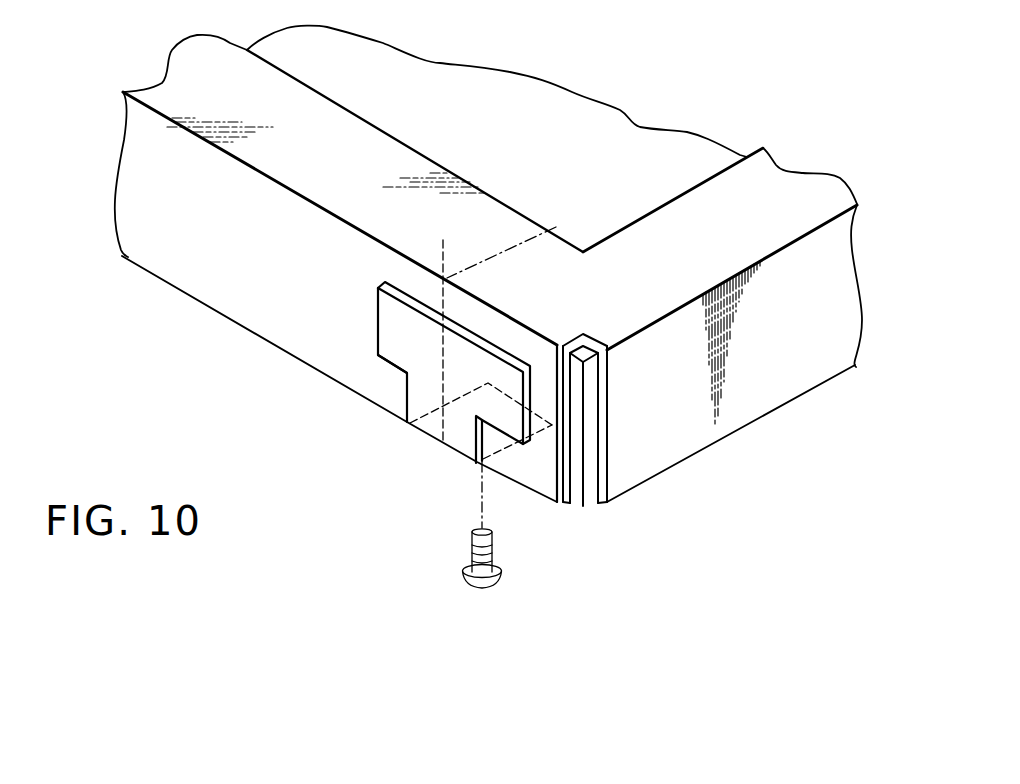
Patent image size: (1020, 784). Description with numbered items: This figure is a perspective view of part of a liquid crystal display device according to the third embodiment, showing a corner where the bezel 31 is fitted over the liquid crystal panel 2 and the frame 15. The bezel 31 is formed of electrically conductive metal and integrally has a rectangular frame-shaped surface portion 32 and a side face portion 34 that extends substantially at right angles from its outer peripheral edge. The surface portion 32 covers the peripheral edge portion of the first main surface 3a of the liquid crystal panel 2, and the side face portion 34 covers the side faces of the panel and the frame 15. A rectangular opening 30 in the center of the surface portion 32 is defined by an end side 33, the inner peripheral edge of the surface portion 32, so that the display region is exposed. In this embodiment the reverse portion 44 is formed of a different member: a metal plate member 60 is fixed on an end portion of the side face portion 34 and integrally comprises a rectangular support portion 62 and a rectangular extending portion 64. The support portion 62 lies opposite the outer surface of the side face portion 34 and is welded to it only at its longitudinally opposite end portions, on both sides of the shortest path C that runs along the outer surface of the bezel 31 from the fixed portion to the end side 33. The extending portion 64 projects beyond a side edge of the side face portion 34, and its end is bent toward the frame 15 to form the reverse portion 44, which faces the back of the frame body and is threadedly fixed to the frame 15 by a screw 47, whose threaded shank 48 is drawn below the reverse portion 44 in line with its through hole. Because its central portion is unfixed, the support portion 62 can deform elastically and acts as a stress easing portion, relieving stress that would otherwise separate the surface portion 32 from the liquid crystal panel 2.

The liquid crystal panel 2 is at (464, 75).
The first main surface 3a is at (537, 95).
The opening 30 is at (680, 140).
The bezel 31 is at (487, 183).
The surface portion 32 is at (309, 105).
The end side 33 is at (437, 155).
The side face portion 34 is at (157, 242).
The shortest path C is at (537, 230).
The plate member 60 is at (460, 340).
The support portion 62 is at (480, 360).
The extending portion 64 is at (417, 390).
The reverse portion 44 is at (550, 425).
The screw shank 48 is at (484, 550).
The screw 47 is at (492, 584).
The frame 15 is at (585, 506).